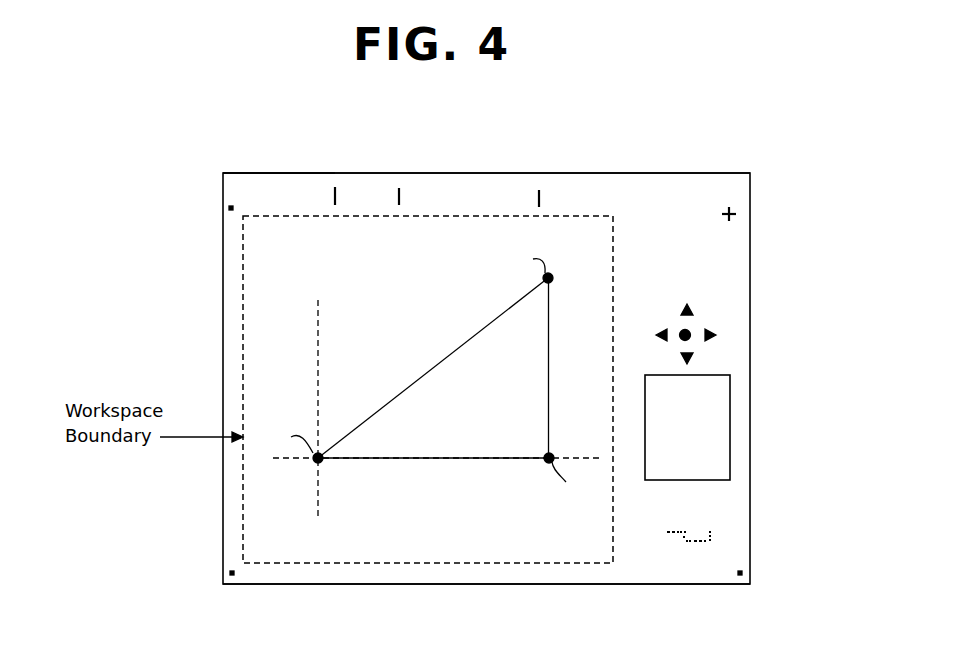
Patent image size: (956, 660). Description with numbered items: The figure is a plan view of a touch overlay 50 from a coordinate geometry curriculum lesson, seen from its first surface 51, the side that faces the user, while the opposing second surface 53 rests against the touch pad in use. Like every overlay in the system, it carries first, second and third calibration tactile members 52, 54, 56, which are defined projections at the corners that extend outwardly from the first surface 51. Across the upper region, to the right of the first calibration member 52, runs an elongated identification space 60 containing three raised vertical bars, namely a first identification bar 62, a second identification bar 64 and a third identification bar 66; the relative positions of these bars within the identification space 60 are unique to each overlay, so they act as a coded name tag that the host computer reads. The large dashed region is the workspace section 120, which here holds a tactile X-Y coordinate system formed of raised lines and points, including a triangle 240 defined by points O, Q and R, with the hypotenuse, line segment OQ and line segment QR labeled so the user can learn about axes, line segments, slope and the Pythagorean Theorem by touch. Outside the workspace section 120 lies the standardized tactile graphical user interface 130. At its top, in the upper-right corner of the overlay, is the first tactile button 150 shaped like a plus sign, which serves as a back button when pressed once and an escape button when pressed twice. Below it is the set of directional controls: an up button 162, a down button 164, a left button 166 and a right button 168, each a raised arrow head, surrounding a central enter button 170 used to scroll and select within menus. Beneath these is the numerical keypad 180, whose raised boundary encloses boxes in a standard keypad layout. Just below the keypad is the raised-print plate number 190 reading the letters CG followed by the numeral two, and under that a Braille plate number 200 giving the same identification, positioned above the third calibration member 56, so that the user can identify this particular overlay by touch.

The touch overlay 50 is at (548, 159).
The first surface 51 is at (695, 173).
The first calibration tactile member 52 is at (229, 208).
The second surface 53 is at (478, 585).
The second calibration tactile member 54 is at (232, 576).
The third calibration tactile member 56 is at (740, 577).
The identification space 60 is at (275, 188).
The first identification bar 62 is at (335, 187).
The second identification bar 64 is at (399, 188).
The third identification bar 66 is at (539, 190).
The workspace section 120 is at (312, 257).
The tactile graphical user interface 130 is at (725, 327).
The first tactile button 150 is at (737, 220).
The up button 162 is at (685, 303).
The down button 164 is at (681, 358).
The left button 166 is at (661, 330).
The right button 168 is at (747, 339).
The enter button 170 is at (688, 329).
The numerical keypad 180 is at (733, 443).
The raised-print plate number 190 is at (718, 500).
The Braille plate number 200 is at (693, 548).
The triangle 240 is at (429, 382).